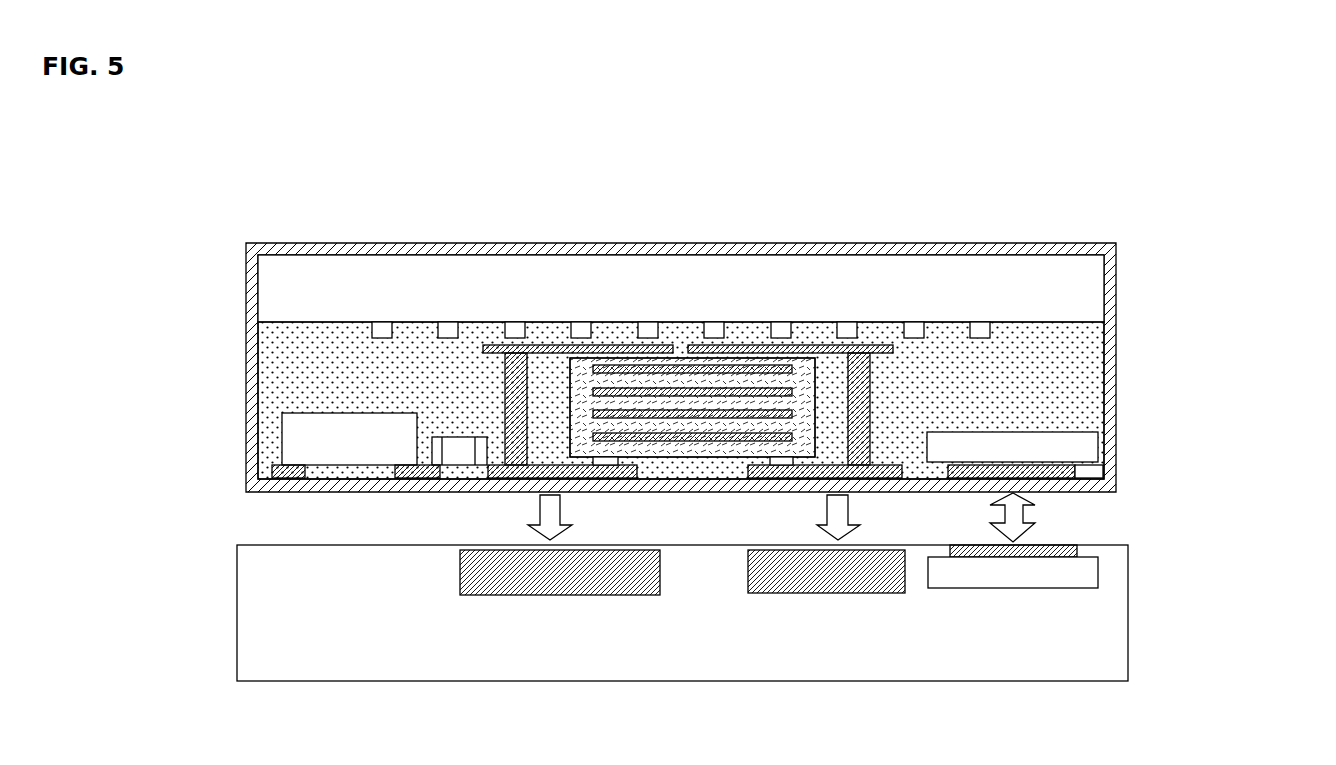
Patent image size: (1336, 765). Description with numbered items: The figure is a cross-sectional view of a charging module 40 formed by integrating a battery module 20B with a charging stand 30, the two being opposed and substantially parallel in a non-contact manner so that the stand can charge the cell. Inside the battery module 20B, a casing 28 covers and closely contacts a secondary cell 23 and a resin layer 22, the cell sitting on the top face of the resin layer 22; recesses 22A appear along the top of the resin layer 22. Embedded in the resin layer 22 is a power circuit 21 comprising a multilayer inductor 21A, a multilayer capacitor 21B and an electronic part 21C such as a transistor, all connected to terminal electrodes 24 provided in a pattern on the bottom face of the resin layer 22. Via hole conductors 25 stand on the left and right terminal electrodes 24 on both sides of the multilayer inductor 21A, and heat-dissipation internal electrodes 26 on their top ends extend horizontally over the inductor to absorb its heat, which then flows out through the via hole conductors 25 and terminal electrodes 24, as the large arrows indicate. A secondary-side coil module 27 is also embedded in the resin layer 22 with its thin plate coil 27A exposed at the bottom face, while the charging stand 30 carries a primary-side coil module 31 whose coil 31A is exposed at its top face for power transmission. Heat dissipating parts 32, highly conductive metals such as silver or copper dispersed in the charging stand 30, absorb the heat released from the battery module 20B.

The charging module 40 is at (611, 198).
The battery module 20B is at (1157, 335).
The casing 28 is at (248, 343).
The secondary cell 23 is at (1055, 283).
The resin layer 22 is at (1055, 375).
The recesses in resin layer 22A is at (778, 323).
The power circuit 21 is at (297, 439).
The multilayer inductor 21A is at (618, 425).
The multilayer capacitor 21B is at (455, 448).
The electronic part 21C is at (330, 440).
The terminal electrodes 24 is at (777, 476).
The via hole conductors 25 is at (507, 383).
The heat-dissipation internal electrodes 26 is at (650, 345).
The secondary-side coil module 27 is at (1065, 448).
The coil 27A is at (1080, 470).
The charging stand 30 is at (1066, 650).
The primary-side coil module 31 is at (1068, 573).
The coil 31A is at (1068, 550).
The heat dissipating parts 32 is at (638, 568).